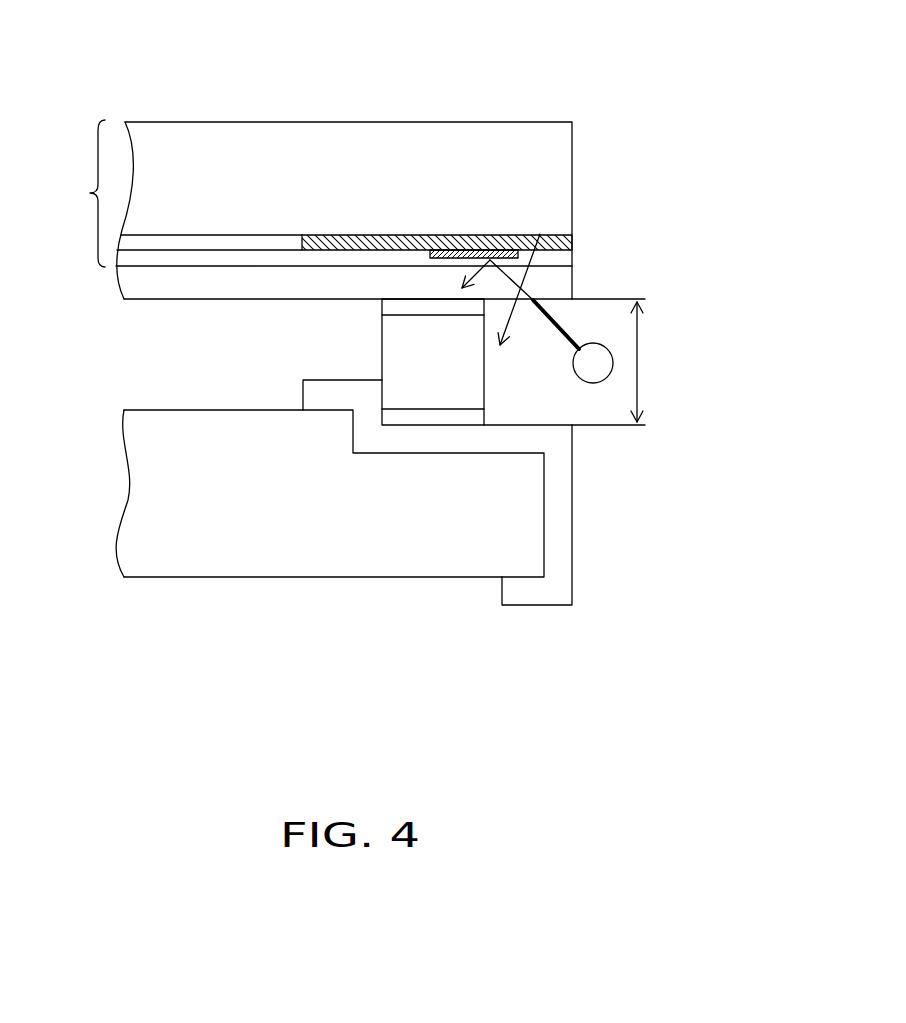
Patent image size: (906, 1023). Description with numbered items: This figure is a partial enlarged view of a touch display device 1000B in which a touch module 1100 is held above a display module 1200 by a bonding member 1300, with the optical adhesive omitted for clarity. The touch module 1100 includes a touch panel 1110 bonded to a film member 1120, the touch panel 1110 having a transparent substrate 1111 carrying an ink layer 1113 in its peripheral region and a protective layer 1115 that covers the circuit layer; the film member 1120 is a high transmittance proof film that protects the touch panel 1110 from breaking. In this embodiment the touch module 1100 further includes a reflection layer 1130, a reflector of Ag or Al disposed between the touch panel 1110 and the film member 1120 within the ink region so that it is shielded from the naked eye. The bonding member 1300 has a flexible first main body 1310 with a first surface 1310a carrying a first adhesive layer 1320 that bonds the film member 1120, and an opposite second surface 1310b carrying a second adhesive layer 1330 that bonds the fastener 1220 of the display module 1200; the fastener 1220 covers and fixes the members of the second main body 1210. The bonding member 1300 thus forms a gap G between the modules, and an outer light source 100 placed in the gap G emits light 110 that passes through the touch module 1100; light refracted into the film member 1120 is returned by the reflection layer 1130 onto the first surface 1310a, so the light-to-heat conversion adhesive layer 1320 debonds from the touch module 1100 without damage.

The touch display device 1000B is at (773, 735).
The touch module 1100 is at (623, 152).
The touch panel 1110 is at (69, 193).
The film member 1120 is at (170, 240).
The protective layer 1115 is at (226, 260).
The substrate 1111 is at (285, 175).
The ink layer 1113 is at (440, 245).
The reflection layer 1130 is at (538, 236).
The light 110 is at (540, 236).
The outer light source 100 is at (595, 360).
The bonding member 1300 is at (355, 333).
The first main body 1310 is at (408, 360).
The first surface 1310a is at (404, 313).
The second surface 1310b is at (418, 412).
The first adhesive layer 1320 is at (423, 307).
The second adhesive layer 1330 is at (393, 418).
The display module 1200 is at (592, 554).
The second main body 1210 is at (177, 538).
The fastener 1220 is at (526, 590).
The gap G is at (618, 362).